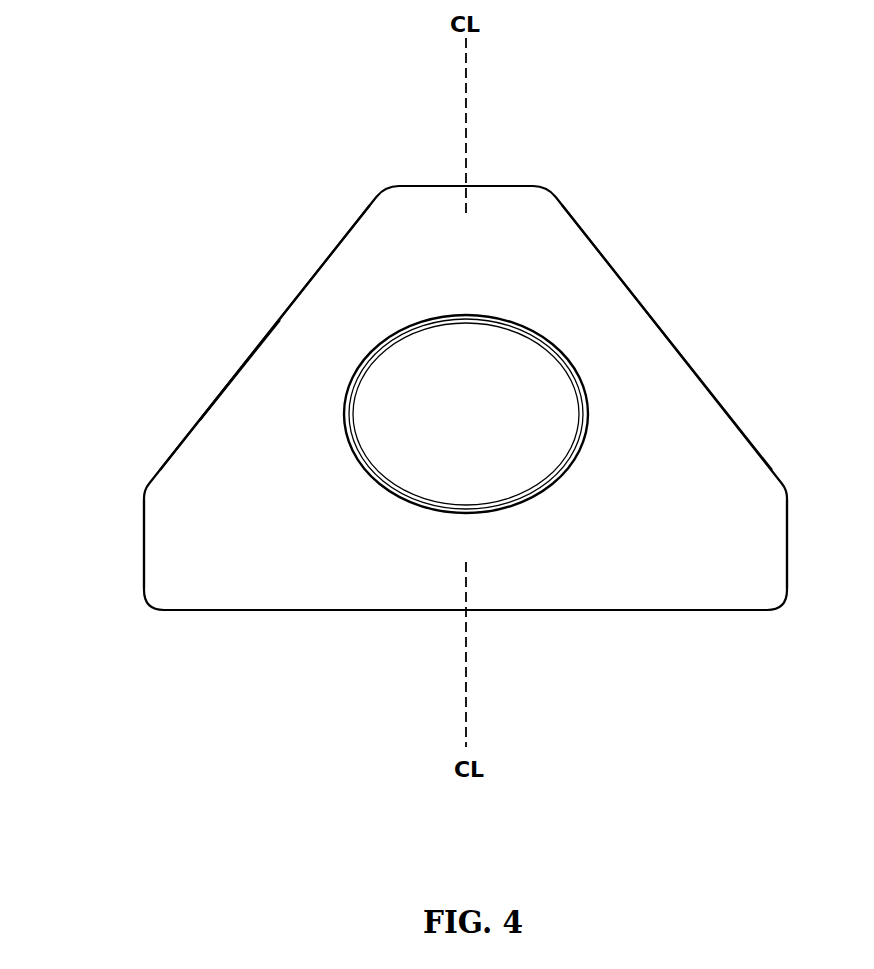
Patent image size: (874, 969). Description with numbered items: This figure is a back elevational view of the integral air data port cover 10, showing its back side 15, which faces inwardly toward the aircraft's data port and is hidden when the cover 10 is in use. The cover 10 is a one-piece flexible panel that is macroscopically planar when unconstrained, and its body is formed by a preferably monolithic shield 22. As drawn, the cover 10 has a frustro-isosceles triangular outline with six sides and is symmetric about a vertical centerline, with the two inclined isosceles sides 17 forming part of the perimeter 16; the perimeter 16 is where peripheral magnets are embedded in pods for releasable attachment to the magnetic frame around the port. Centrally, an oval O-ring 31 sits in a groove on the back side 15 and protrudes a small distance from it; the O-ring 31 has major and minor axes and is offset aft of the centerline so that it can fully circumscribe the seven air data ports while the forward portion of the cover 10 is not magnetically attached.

The air data port cover 10 is at (664, 148).
The back side 15 is at (465, 398).
The perimeter 16 is at (143, 538).
The isosceles side 17 is at (168, 457).
The shield 22 is at (255, 408).
The O-ring 31 is at (378, 347).